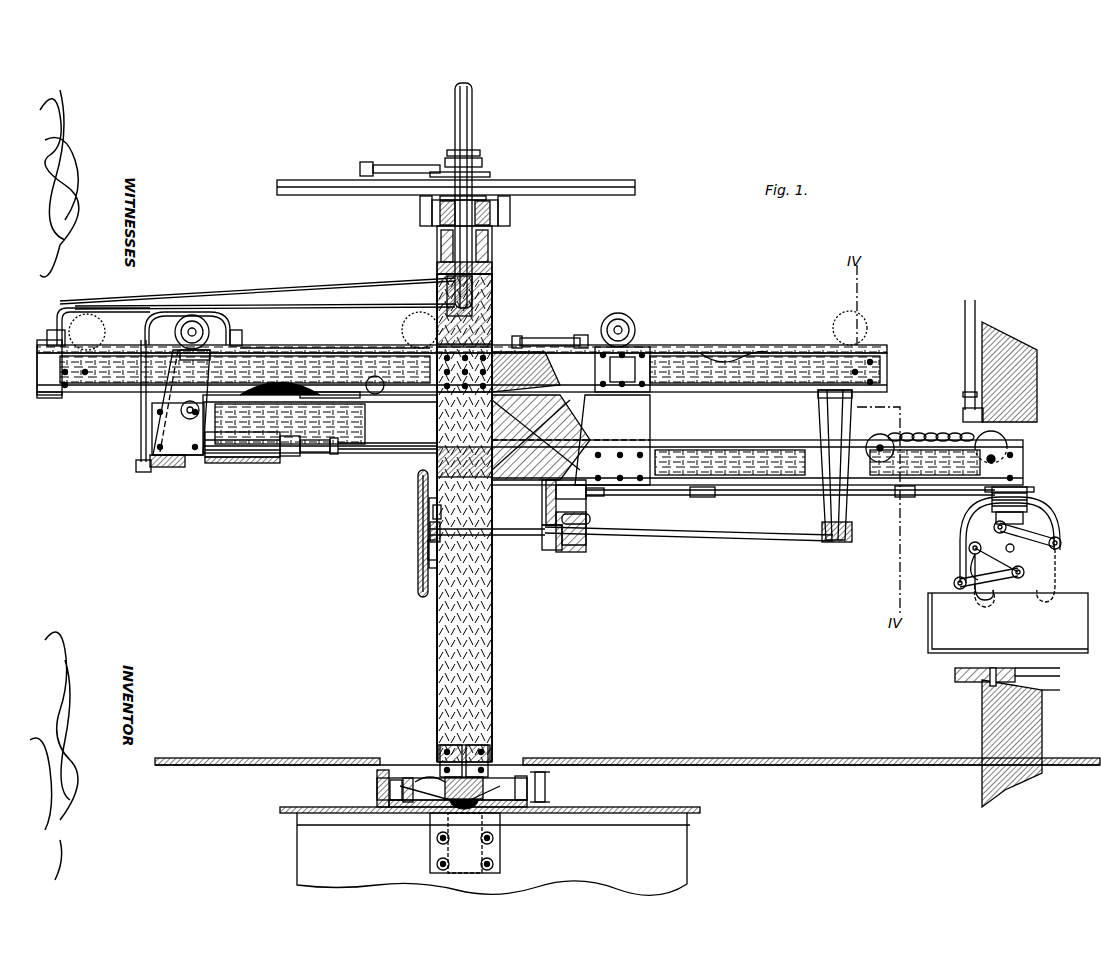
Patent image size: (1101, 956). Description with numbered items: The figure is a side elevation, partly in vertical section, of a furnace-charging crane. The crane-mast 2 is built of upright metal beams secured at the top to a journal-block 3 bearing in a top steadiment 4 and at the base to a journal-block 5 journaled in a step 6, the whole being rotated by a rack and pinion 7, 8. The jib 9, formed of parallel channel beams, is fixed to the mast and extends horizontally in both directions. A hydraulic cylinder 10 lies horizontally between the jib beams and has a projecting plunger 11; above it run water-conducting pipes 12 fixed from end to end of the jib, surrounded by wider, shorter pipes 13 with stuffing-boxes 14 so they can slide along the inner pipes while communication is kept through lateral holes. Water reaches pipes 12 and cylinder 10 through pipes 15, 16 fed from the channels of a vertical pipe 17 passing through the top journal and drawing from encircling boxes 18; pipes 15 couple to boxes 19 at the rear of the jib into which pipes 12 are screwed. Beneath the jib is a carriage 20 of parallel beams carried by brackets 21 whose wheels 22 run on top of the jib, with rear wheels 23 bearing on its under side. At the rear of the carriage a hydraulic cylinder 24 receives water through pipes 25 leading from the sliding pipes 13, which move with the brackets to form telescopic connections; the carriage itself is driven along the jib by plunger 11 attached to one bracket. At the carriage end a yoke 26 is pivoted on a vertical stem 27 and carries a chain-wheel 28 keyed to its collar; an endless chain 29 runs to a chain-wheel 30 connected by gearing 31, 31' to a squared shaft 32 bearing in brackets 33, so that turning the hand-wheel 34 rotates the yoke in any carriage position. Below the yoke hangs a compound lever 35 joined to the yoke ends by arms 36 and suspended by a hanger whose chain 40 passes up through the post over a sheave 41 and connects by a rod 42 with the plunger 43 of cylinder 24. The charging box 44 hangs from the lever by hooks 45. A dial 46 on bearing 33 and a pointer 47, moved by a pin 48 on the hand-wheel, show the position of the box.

The crane-mast 2 is at (490, 612).
The journal-block 3 is at (487, 251).
The top steadiment 4 is at (498, 210).
The journal-block 5 is at (480, 770).
The step 6 is at (470, 815).
The rack 7 is at (528, 787).
The pinion 8 is at (405, 778).
The jib 9 is at (115, 380).
The hydraulic cylinder 10 is at (37, 395).
The plunger 11 is at (545, 380).
The water-conducting pipes 12 is at (120, 344).
The outer pipes 13 is at (325, 346).
The stuffing-boxes 14 is at (574, 340).
The pipes 15 is at (353, 306).
The pipes 16 is at (350, 292).
The vertical pipe 17 is at (455, 127).
The encircling boxes 18 is at (478, 167).
The boxes 19 is at (47, 335).
The carriage 20 is at (613, 434).
The brackets 21 is at (617, 412).
The wheels 22 is at (176, 332).
The wheels 23 is at (200, 426).
The hydraulic cylinder 24 is at (250, 460).
The water-supply pipes 25 is at (228, 326).
The yoke 26 is at (960, 530).
The stem 27 is at (995, 525).
The chain-wheel 28 is at (1028, 490).
The endless chain 29 is at (650, 495).
The chain-wheel 30 is at (590, 498).
The gearing 31 is at (567, 519).
The gearing 31' is at (594, 520).
The shaft 32 is at (662, 534).
The brackets 33 is at (835, 474).
The hand-wheel 34 is at (418, 505).
The compound lever 35 is at (441, 514).
The arms 36 is at (1025, 530).
The chain 40 is at (945, 435).
The sheave 41 is at (1000, 441).
The rod 42 is at (380, 446).
The plunger 43 is at (312, 452).
The box 44 is at (1008, 623).
The hooks 45 is at (972, 568).
The dial 46 is at (436, 548).
The pointer 47 is at (422, 497).
The pin 48 is at (418, 512).